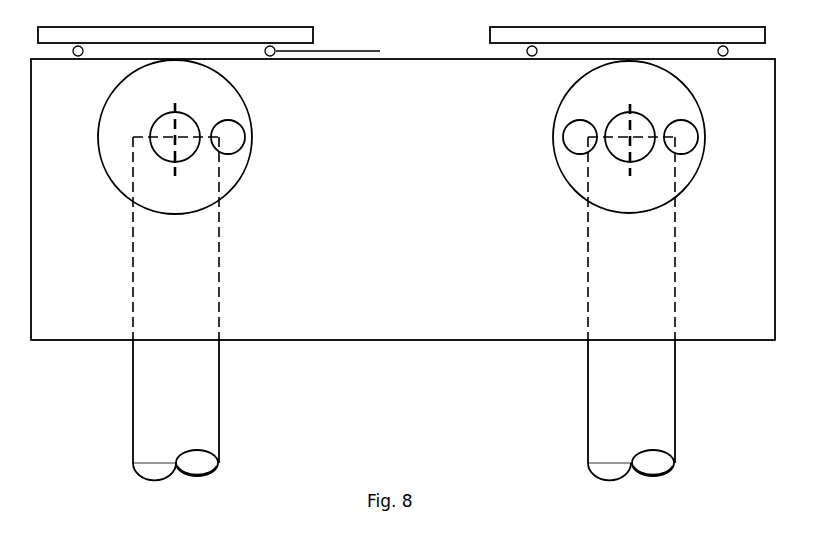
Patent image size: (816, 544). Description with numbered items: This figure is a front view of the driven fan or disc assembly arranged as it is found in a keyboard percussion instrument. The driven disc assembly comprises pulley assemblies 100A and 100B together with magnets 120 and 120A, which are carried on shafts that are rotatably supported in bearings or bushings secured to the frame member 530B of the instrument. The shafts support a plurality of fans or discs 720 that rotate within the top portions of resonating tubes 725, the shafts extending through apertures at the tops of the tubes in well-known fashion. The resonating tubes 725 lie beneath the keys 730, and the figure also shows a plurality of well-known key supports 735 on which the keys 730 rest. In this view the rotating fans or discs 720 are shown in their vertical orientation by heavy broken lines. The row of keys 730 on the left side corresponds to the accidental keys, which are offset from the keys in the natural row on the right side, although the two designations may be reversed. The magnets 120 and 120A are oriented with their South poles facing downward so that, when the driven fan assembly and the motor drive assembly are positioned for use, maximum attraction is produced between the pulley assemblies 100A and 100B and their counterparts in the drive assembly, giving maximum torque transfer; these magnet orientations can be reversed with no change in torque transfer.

The keys 730 is at (313, 35).
The key supports 735 is at (347, 52).
The pulley assembly 100B is at (108, 101).
The pulley assembly 100A is at (687, 187).
The fans or discs 720 is at (177, 105).
The magnet 120A is at (245, 147).
The magnet 120 is at (563, 137).
The resonating tubes 725 is at (219, 240).
The frame member 530B is at (53, 342).